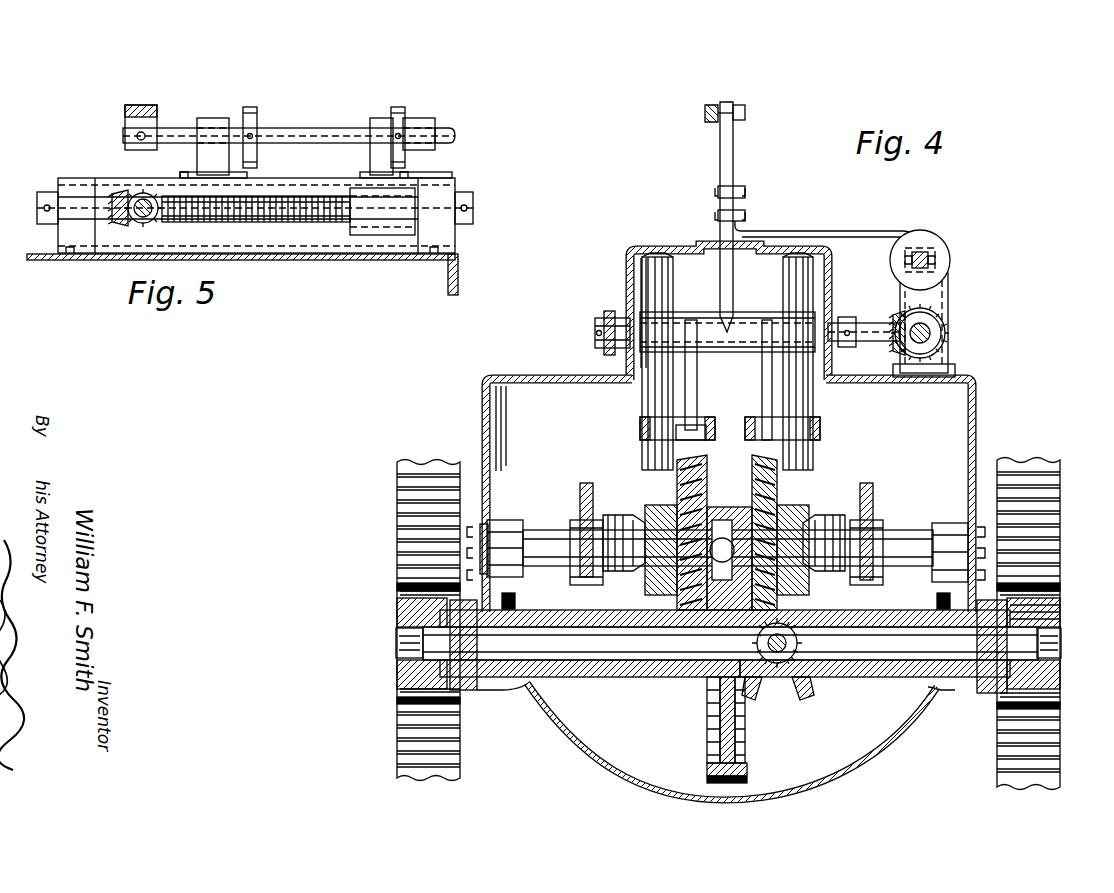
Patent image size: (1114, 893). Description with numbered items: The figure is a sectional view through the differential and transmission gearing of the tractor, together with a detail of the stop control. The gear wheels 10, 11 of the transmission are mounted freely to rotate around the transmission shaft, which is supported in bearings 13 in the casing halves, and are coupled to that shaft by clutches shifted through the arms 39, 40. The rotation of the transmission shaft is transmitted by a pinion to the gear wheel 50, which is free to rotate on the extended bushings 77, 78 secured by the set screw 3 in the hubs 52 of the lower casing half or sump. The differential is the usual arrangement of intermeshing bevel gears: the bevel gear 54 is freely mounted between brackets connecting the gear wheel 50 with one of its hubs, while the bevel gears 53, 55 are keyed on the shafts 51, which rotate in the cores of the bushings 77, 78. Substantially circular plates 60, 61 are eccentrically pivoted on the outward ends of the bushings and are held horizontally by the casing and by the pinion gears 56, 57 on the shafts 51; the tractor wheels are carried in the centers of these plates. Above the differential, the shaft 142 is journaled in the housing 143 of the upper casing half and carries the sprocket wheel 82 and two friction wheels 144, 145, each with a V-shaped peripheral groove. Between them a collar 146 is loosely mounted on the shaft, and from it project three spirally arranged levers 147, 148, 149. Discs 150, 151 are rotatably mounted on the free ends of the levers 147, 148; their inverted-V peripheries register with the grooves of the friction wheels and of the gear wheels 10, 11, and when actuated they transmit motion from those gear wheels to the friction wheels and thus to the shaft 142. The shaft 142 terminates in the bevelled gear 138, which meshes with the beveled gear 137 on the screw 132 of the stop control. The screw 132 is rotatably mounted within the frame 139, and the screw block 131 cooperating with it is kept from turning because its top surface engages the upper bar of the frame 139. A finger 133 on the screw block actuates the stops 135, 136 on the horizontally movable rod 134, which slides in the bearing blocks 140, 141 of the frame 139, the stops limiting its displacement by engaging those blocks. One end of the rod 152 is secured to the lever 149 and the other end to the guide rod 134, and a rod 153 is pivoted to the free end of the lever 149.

In FIG. 4, the set screw 3 is at (516, 601).
In FIG. 4, the gear wheel 10 is at (698, 470).
In FIG. 4, the gear wheel 11 is at (760, 470).
In FIG. 4, the bearings 13 is at (510, 520).
In FIG. 5, the arm 39 is at (62, 238).
In FIG. 4, the arm 39 is at (583, 484).
In FIG. 4, the arm 40 is at (870, 484).
In FIG. 4, the gear wheel 50 is at (749, 762).
In FIG. 4, the shafts 51 is at (728, 642).
In FIG. 4, the hubs 52 is at (490, 691).
In FIG. 4, the bevel gear 53 is at (754, 690).
In FIG. 4, the bevel gear 54 is at (779, 665).
In FIG. 4, the bevel gear 55 is at (806, 690).
In FIG. 4, the pinion gear 56 is at (1061, 613).
In FIG. 4, the pinion gear 57 is at (398, 608).
In FIG. 4, the circular plate 60 is at (398, 518).
In FIG. 4, the circular plate 61 is at (1056, 514).
In FIG. 4, the bushing 77 is at (618, 678).
In FIG. 4, the bushing 78 is at (890, 678).
In FIG. 4, the sprocket wheel 82 is at (608, 312).
In FIG. 5, the screw block 131 is at (356, 230).
In FIG. 5, the screw 132 is at (224, 222).
In FIG. 4, the screw 132 is at (944, 326).
In FIG. 5, the finger 133 is at (380, 122).
In FIG. 5, the rod 134 is at (458, 138).
In FIG. 4, the rod 134 is at (929, 262).
In FIG. 5, the stop 135 is at (402, 112).
In FIG. 5, the stop 136 is at (258, 120).
In FIG. 4, the stop 136 is at (951, 262).
In FIG. 5, the beveled gear 137 is at (123, 226).
In FIG. 4, the beveled gear 137 is at (932, 335).
In FIG. 5, the bevelled gear 138 is at (160, 216).
In FIG. 4, the bevelled gear 138 is at (895, 318).
In FIG. 5, the frame 139 is at (118, 180).
In FIG. 4, the frame 139 is at (955, 370).
In FIG. 5, the bearing block 140 is at (430, 122).
In FIG. 5, the bearing block 141 is at (208, 122).
In FIG. 4, the bearing block 141 is at (949, 284).
In FIG. 4, the shaft 142 is at (858, 320).
In FIG. 4, the housing 143 is at (672, 247).
In FIG. 4, the friction wheel 144 is at (674, 280).
In FIG. 4, the friction wheel 145 is at (784, 275).
In FIG. 4, the collar 146 is at (730, 353).
In FIG. 4, the lever 147 is at (698, 390).
In FIG. 4, the lever 148 is at (762, 412).
In FIG. 4, the lever 149 is at (734, 298).
In FIG. 4, the disc 150 is at (640, 412).
In FIG. 4, the disc 151 is at (820, 412).
In FIG. 5, the rod 152 is at (125, 114).
In FIG. 4, the rod 152 is at (855, 231).
In FIG. 4, the rod 153 is at (705, 113).